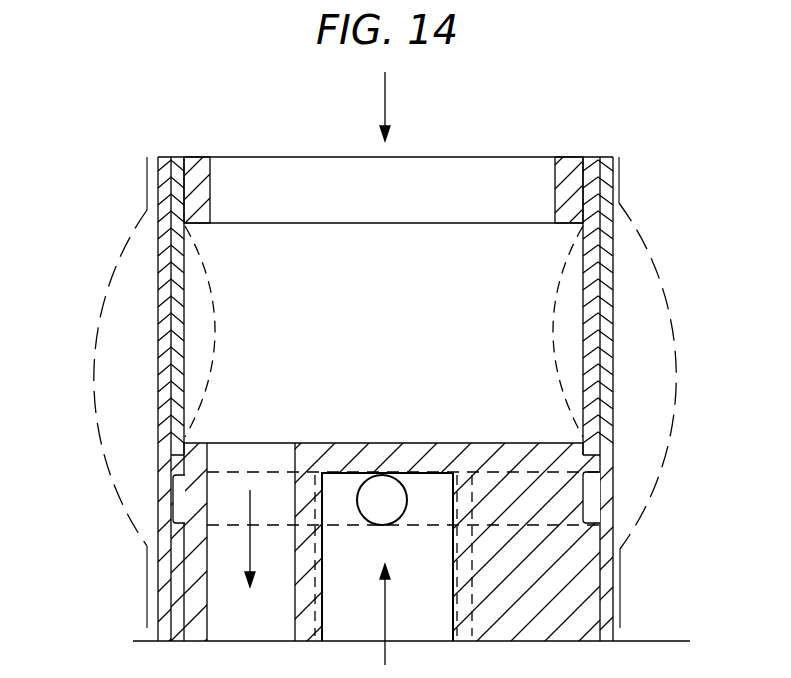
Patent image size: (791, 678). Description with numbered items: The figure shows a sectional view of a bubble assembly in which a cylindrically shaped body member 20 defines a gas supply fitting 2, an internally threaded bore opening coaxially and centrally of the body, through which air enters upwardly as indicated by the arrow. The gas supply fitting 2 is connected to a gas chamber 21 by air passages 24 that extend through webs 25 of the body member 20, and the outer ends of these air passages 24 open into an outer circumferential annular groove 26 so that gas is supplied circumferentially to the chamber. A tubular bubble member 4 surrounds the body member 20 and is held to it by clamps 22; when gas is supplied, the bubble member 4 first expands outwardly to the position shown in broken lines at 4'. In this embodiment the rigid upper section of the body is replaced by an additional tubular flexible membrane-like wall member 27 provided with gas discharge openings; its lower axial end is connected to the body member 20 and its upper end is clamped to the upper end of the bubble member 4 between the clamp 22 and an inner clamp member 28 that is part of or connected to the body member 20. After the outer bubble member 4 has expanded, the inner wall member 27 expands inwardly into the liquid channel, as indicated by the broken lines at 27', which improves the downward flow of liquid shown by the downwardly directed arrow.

The gas supply fitting 2 is at (418, 617).
The bubble member 4 is at (604, 331).
The expanded position of bubble member 4' is at (124, 331).
The body member 20 is at (622, 560).
The gas chamber 21 is at (630, 427).
The clamp 22 is at (619, 203).
The air passage 24 is at (368, 498).
The web 25 is at (224, 543).
The annular groove 26 is at (600, 490).
The flexible membrane-like wall member 27 is at (106, 306).
The expanded position of wall member 27' is at (634, 306).
The inner clamp member 28 is at (200, 165).